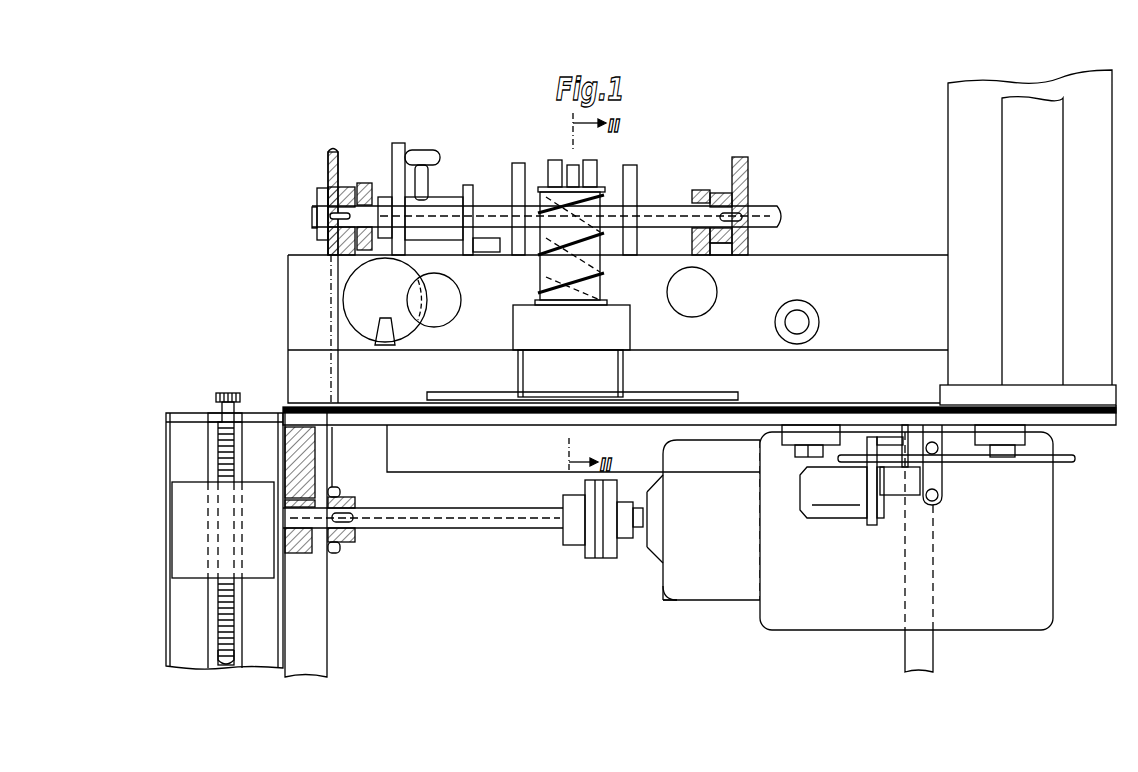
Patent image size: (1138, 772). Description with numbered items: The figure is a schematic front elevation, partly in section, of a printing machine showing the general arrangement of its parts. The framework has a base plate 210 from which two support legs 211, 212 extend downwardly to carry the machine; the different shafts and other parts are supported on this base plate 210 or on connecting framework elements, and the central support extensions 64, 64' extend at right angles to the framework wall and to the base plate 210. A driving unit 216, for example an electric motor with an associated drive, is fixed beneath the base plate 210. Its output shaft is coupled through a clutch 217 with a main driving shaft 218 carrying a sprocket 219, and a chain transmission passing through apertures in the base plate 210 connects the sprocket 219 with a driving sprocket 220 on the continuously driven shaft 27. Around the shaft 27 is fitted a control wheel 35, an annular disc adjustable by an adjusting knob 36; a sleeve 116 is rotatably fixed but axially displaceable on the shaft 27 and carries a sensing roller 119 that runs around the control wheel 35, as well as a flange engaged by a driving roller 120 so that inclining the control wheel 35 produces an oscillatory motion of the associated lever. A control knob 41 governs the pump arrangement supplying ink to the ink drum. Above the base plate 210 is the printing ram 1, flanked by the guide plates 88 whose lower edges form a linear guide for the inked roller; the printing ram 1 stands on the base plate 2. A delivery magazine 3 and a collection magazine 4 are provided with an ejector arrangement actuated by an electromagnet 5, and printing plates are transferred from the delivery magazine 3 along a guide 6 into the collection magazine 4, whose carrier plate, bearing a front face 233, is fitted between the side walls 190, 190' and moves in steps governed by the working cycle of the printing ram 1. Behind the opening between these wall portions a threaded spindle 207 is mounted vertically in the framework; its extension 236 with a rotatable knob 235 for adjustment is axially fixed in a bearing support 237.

The printing ram 1 is at (595, 217).
The base plate 2 is at (607, 394).
The delivery magazine 3 is at (1010, 187).
The collection magazine 4 is at (237, 615).
The electromagnet 5 is at (853, 475).
The guide 6 is at (815, 407).
The main driving shaft 27 is at (760, 215).
The control wheel 35 is at (397, 158).
The adjusting knob 36 is at (455, 297).
The control knob 41 is at (803, 320).
The central support extension 64 is at (645, 196).
The central support extension 64' is at (529, 188).
The guide plate 88 is at (630, 360).
The sleeve 116 is at (447, 202).
The sensing roller 119 is at (436, 156).
The driving roller 120 is at (490, 240).
The side wall 190 is at (180, 545).
The side wall section 190' is at (192, 539).
The spindle 207 is at (220, 647).
The base plate 210 is at (357, 425).
The support leg 211 is at (315, 643).
The support leg 212 is at (910, 657).
The driving unit 216 is at (787, 618).
The clutch 217 is at (590, 558).
The main driving shaft 218 is at (517, 529).
The sprocket 219 is at (352, 540).
The driving sprocket 220 is at (328, 172).
The front face 233 is at (183, 553).
The rotatable knob 235 is at (230, 392).
The extension 236 is at (233, 412).
The bearing support 237 is at (215, 418).